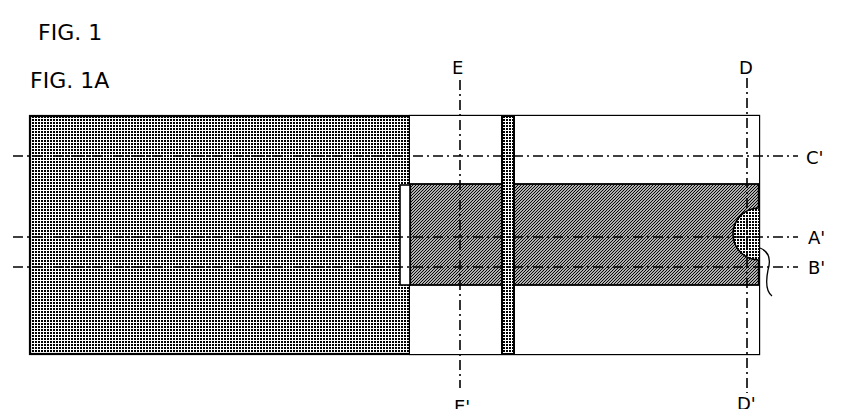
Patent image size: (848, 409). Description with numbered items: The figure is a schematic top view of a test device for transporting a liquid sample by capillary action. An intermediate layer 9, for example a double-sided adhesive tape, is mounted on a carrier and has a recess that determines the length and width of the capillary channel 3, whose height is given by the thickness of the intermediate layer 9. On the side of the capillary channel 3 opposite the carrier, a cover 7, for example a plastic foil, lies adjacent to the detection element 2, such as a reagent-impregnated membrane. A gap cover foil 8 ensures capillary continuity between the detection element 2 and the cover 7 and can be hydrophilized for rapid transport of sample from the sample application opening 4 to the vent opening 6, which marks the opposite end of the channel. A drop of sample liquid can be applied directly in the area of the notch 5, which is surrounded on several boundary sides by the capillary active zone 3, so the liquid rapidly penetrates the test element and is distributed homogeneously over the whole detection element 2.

The detection element 2 is at (465, 118).
The capillary channel 3 is at (648, 240).
The sample application opening 4 is at (757, 212).
The notch 5 is at (777, 283).
The vent opening 6 is at (392, 282).
The cover 7 is at (578, 122).
The gap cover foil 8 is at (504, 340).
The intermediate layer 9 is at (112, 332).